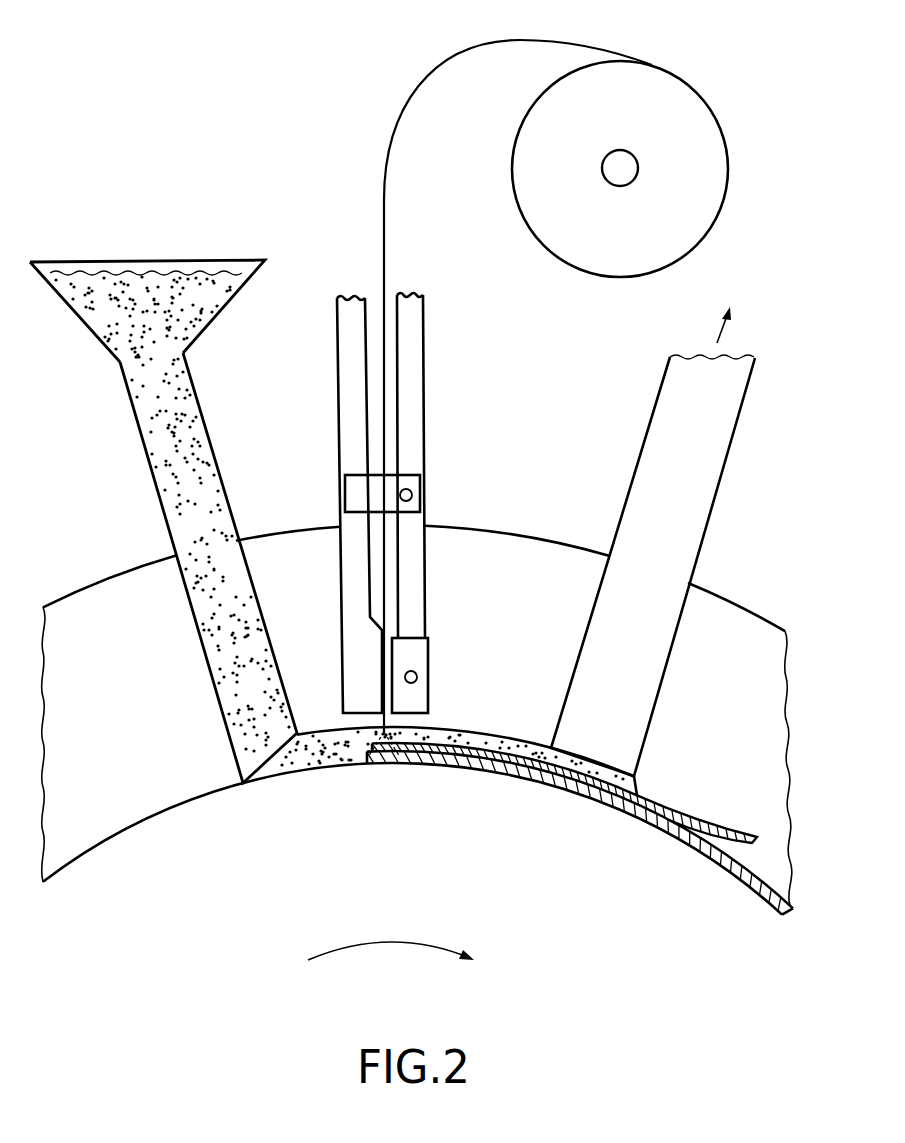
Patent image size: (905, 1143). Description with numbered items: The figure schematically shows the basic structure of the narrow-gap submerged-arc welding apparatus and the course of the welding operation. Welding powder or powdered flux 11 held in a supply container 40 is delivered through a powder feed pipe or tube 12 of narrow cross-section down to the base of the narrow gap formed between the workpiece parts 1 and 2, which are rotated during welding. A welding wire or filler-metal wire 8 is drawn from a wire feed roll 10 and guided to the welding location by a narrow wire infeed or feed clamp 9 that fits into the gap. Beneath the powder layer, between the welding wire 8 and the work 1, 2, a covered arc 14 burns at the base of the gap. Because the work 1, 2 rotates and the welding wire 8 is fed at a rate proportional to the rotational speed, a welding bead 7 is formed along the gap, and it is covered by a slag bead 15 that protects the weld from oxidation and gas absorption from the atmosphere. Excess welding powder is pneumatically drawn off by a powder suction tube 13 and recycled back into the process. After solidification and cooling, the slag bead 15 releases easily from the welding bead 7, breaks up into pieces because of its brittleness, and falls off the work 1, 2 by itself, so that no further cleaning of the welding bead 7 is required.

The workpiece part 1 is at (417, 720).
The workpiece part 2 is at (130, 570).
The welding bead 7 is at (667, 813).
The welding wire 8 is at (384, 452).
The wire feed clamp 9 is at (350, 358).
The wire feed roll 10 is at (698, 95).
The welding powder 11 is at (110, 293).
The powder feed tube 12 is at (157, 485).
The powder suction tube 13 is at (657, 400).
The covered arc 14 is at (392, 740).
The slag bead 15 is at (527, 750).
The supply container 40 is at (90, 330).